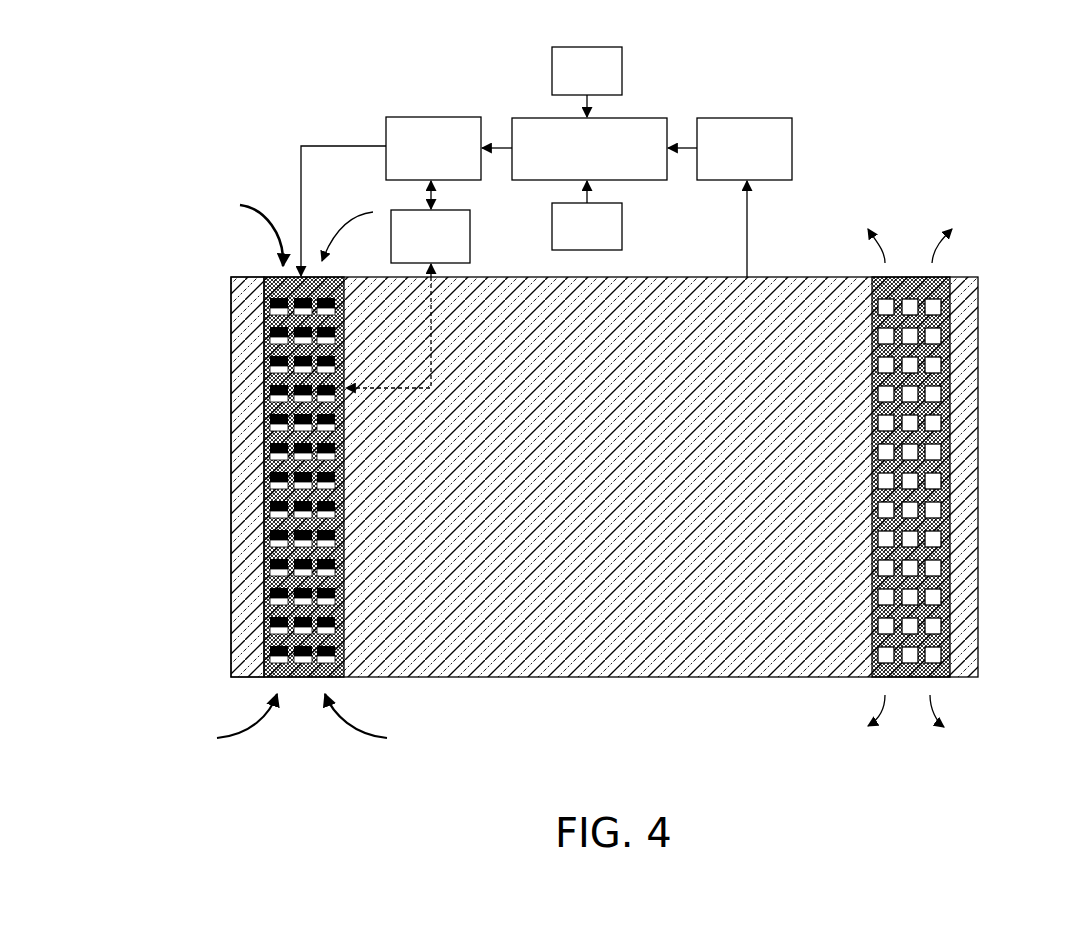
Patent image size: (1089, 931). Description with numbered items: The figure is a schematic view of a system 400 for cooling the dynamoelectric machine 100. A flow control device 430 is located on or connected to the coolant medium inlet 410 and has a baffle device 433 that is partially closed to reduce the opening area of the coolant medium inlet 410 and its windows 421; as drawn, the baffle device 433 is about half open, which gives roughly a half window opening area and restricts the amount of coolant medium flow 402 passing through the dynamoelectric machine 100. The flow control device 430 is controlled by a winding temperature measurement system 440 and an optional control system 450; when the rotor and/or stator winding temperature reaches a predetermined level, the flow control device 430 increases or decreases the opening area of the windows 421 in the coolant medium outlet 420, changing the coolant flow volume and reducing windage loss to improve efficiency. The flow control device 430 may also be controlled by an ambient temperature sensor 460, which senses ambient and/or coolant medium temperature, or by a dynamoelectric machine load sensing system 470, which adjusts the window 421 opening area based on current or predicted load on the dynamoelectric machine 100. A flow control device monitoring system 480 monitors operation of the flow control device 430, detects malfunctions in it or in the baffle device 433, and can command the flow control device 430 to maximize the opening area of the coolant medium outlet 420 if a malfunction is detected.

The dynamoelectric machine 100 is at (620, 678).
The system for cooling the dynamoelectric machine 400 is at (257, 97).
The coolant medium flow 402 is at (265, 213).
The coolant medium inlet 410 is at (232, 450).
The coolant medium outlet 420 is at (950, 490).
The windows 421 is at (262, 340).
The baffle device 433 is at (273, 590).
The flow control device 430 is at (450, 161).
The winding temperature measurement system 440 is at (761, 161).
The control system 450 is at (606, 161).
The ambient temperature sensor 460 is at (605, 84).
The dynamoelectric machine load sensing system 470 is at (605, 239).
The flow control device monitoring system 480 is at (448, 248).